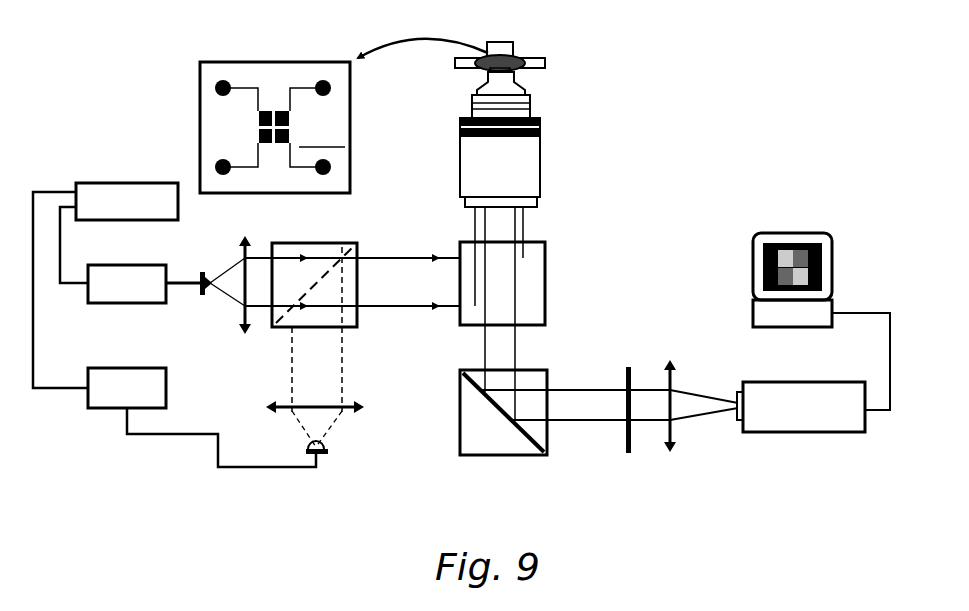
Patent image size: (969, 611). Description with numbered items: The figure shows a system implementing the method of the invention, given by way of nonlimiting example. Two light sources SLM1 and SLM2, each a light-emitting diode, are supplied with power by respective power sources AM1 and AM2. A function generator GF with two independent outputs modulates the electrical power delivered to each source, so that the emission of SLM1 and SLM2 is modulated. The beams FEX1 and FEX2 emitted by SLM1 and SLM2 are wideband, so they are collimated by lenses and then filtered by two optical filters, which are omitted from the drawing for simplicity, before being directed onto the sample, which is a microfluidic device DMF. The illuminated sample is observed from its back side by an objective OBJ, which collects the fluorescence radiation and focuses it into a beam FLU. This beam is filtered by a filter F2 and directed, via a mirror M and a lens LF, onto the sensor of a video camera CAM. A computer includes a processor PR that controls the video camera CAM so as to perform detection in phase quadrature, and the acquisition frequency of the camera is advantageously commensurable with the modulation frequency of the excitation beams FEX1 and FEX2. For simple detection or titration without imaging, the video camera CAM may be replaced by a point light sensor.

The microfluidic device DMF is at (200, 68).
The function generator GF is at (130, 183).
The power source AM1 is at (127, 284).
The power source AM2 is at (127, 388).
The light source SLM1 is at (203, 272).
The light source SLM2 is at (322, 456).
The beam FEX1 is at (266, 242).
The beam FEX2 is at (344, 362).
The objective OBJ is at (526, 163).
The mirror M is at (495, 398).
The beam FLU is at (587, 422).
The filter F2 is at (628, 367).
The lens LF is at (671, 362).
The video camera CAM is at (801, 407).
The processor PR is at (753, 310).